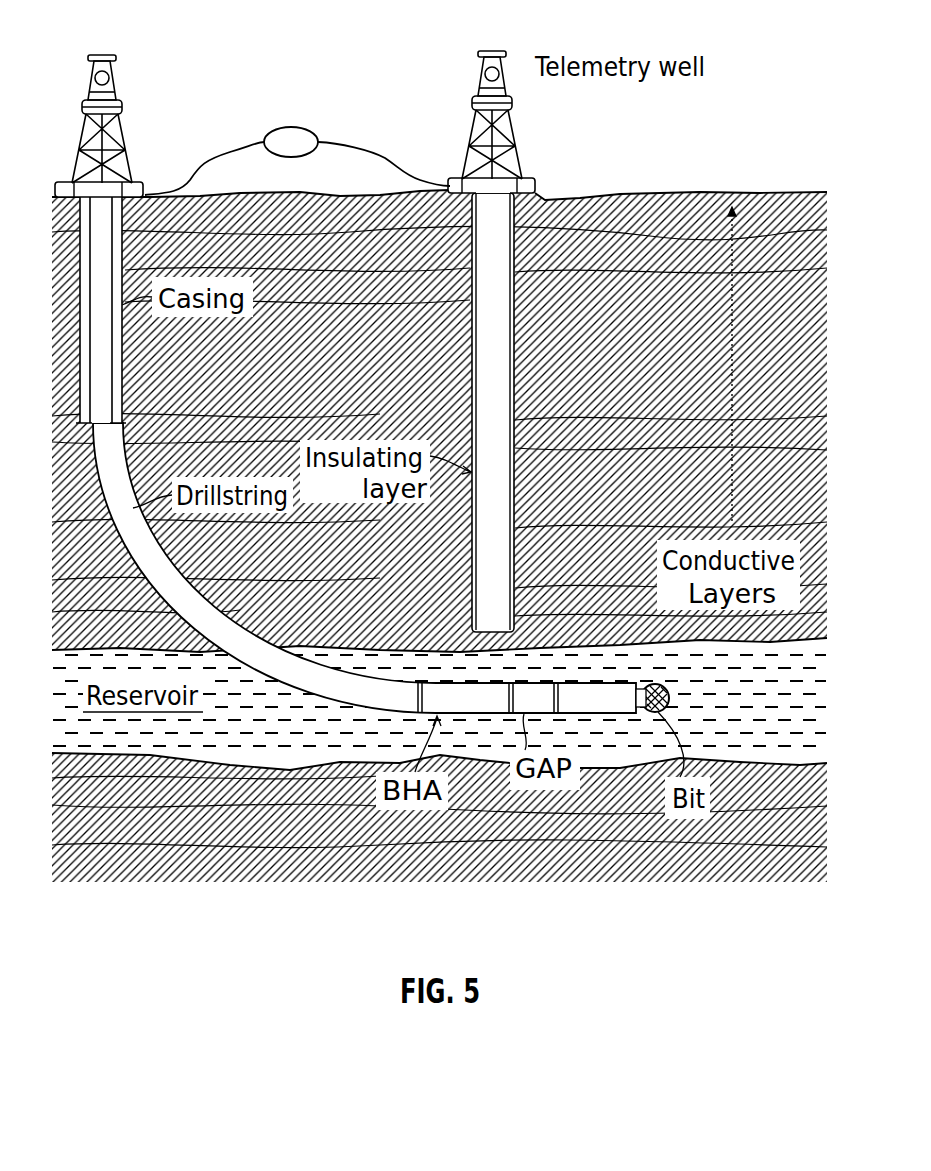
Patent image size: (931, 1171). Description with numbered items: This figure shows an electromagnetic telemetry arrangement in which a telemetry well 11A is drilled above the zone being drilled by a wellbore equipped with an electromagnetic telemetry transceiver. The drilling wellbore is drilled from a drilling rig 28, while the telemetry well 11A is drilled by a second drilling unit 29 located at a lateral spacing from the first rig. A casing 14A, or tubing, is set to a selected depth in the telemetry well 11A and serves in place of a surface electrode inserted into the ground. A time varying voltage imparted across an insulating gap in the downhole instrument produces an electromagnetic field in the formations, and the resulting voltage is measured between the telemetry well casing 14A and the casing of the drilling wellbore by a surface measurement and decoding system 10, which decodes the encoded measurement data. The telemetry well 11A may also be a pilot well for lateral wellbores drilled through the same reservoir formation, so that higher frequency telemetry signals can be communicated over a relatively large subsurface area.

The drilling rig 28 is at (100, 54).
The second drilling unit 29 is at (490, 50).
The surface measurement and decoding system 10 is at (292, 127).
The telemetry well 11A is at (556, 408).
The telemetry well casing 14A is at (513, 325).